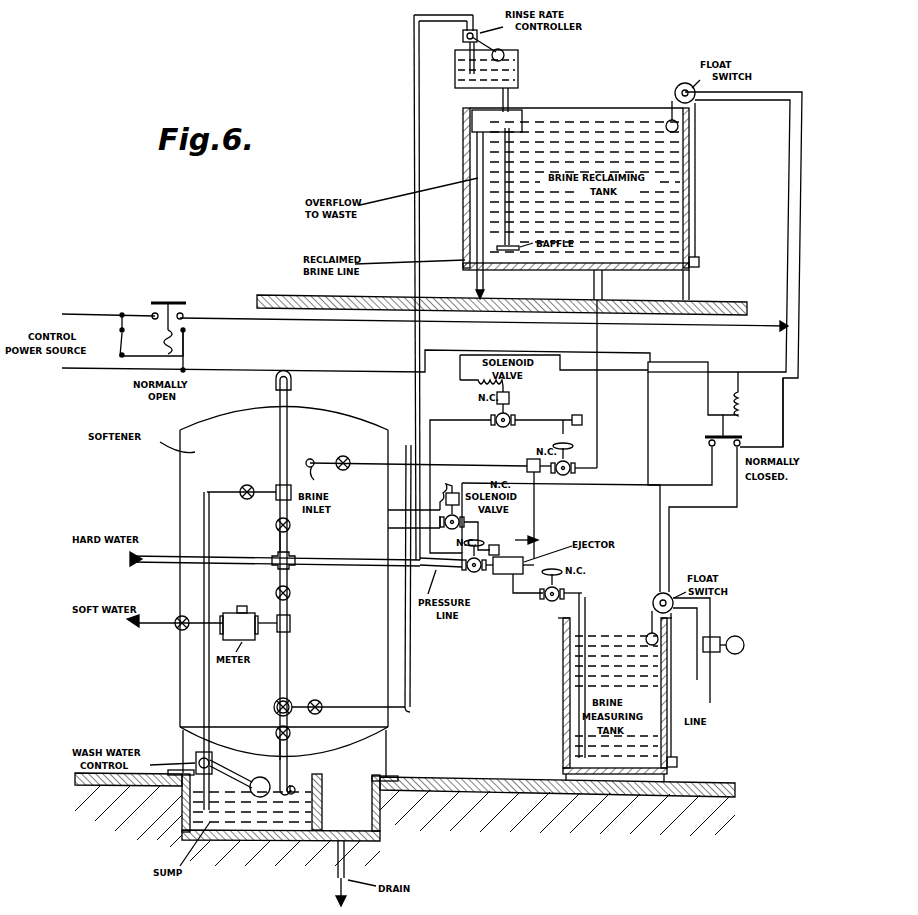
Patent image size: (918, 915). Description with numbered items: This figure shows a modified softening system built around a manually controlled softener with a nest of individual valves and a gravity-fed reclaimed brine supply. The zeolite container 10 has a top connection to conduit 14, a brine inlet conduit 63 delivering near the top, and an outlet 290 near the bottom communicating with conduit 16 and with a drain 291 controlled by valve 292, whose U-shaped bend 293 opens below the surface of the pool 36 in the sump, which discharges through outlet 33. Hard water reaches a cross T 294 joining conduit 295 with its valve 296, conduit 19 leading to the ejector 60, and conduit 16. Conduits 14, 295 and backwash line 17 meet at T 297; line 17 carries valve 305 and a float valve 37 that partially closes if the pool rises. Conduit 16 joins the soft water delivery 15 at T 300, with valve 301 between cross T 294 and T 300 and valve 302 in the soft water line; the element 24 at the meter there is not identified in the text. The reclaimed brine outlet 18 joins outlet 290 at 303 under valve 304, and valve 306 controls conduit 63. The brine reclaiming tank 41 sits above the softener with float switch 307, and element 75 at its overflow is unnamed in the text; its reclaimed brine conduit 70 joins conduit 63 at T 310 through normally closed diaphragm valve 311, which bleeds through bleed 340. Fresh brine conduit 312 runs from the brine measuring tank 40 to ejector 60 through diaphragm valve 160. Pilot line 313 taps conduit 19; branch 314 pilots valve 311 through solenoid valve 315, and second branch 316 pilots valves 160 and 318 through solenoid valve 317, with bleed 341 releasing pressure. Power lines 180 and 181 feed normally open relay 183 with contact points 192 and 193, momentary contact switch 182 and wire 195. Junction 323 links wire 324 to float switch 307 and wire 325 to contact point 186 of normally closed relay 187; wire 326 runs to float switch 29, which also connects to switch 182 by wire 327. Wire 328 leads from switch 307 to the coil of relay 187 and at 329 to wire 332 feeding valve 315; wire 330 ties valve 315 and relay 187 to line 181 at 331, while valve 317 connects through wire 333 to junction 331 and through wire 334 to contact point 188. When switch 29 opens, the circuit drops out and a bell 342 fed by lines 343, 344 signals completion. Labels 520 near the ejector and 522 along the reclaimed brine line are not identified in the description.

The zeolite container 10 is at (238, 418).
The conduit 14 is at (278, 410).
The soft water delivery 15 is at (95, 556).
The conduit 16 is at (290, 650).
The backwash line 17 is at (200, 682).
The reclaimed brine line outlet 18 is at (404, 713).
The conduit 19 is at (352, 562).
The meter 24 is at (242, 606).
The float switch 29 is at (655, 597).
The outlet 33 is at (346, 857).
The pool 36 is at (280, 822).
The float valve 37 is at (214, 760).
The brine measuring tank 40 is at (565, 655).
The brine reclaiming tank 41 is at (697, 150).
The ejector 60 is at (510, 570).
The brine inlet conduit 63 is at (376, 466).
The reclaimed brine conduit 70 is at (599, 392).
The overflow 75 is at (466, 200).
The diaphragm valve 160 is at (565, 590).
The power line 180 is at (72, 314).
The power line 181 is at (70, 370).
The momentary contact switch 182 is at (151, 336).
The relay 183 is at (172, 300).
The contact point 186 is at (742, 442).
The relay 187 is at (706, 434).
The contact point 188 is at (708, 444).
The contact point 192 is at (185, 314).
The contact point 193 is at (151, 314).
The wire 195 is at (186, 346).
The outlet 290 is at (272, 702).
The drain 291 is at (290, 748).
The valve 292 is at (292, 731).
The U-shaped bend 293 is at (295, 786).
The cross T 294 is at (292, 555).
The conduit 295 is at (278, 542).
The valve 296 is at (292, 523).
The T 297 is at (275, 484).
The T 300 is at (290, 618).
The valve 301 is at (292, 592).
The valve 302 is at (175, 632).
The junction 303 is at (273, 710).
The valve 304 is at (316, 699).
The valve 305 is at (240, 486).
The valve 306 is at (355, 453).
The float switch 307 is at (678, 86).
The T 310 is at (524, 462).
The diaphragm valve 311 is at (578, 450).
The fresh brine conduit 312 is at (587, 616).
The pilot line 313 is at (466, 560).
The branch 314 is at (440, 412).
The solenoid valve 315 is at (512, 398).
The branch 316 is at (406, 506).
The solenoid valve 317 is at (394, 526).
The diaphragm valve 318 is at (468, 572).
The junction 323 is at (783, 322).
The wire 324 is at (787, 156).
The wire 325 is at (782, 383).
The wire 326 is at (720, 509).
The wire 327 is at (640, 546).
The wire 328 is at (798, 208).
The connection 329 is at (736, 372).
The wire 330 is at (678, 362).
The junction 331 is at (458, 378).
The wire 332 is at (700, 375).
The wire 333 is at (455, 458).
The wire 334 is at (680, 485).
The bleed 340 is at (583, 420).
The bleed 341 is at (535, 520).
The bell 342 is at (738, 637).
The power line 343 is at (698, 680).
The power line 344 is at (711, 703).
The ejector 520 is at (506, 556).
The reclaimed brine line 522 is at (297, 320).